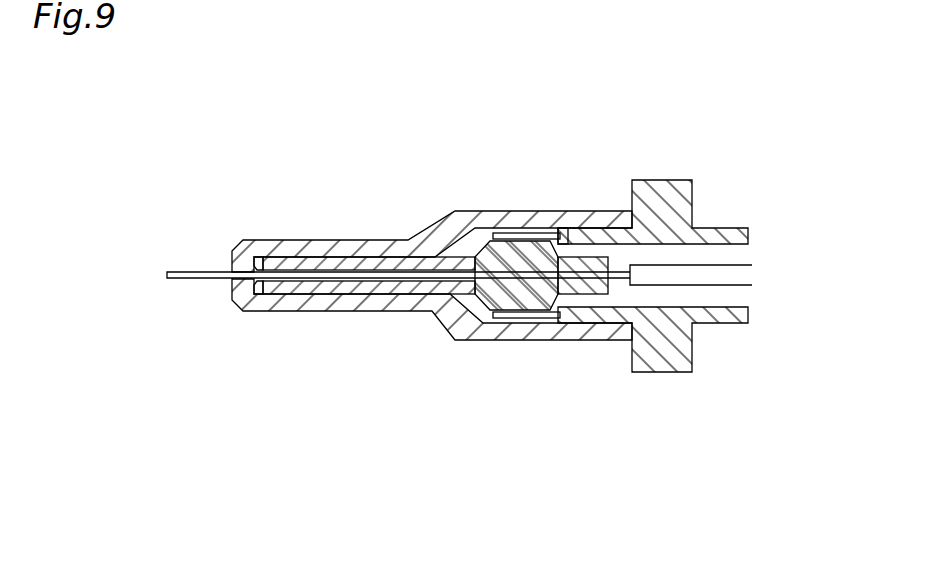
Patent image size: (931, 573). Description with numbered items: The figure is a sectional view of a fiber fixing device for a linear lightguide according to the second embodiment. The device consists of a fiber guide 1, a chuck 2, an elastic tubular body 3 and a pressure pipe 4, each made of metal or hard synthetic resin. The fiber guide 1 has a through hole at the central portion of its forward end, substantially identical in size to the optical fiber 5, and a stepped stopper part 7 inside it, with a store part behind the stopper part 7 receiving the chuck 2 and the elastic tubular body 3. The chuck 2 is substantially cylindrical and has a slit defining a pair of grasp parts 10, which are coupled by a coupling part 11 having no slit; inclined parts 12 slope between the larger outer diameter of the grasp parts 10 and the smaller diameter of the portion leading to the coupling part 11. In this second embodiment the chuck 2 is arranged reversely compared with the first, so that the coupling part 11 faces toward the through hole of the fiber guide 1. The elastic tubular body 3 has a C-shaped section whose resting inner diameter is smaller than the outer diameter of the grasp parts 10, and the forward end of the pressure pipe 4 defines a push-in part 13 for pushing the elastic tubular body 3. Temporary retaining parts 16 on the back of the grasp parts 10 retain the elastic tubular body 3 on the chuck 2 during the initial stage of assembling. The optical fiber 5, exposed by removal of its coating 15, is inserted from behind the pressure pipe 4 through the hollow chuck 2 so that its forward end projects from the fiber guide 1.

The fiber guide 1 is at (432, 265).
The chuck 2 is at (382, 297).
The elastic tubular body 3 is at (513, 227).
The pressure pipe 4 is at (723, 323).
The optical fiber 5 is at (177, 281).
The stopper part 7 is at (261, 262).
The grasp parts 10 is at (545, 231).
The coupling part 11 is at (338, 262).
The inclined parts 12 is at (552, 295).
The push-in part 13 is at (587, 228).
The coating 15 is at (735, 278).
The temporary retaining parts 16 is at (580, 288).